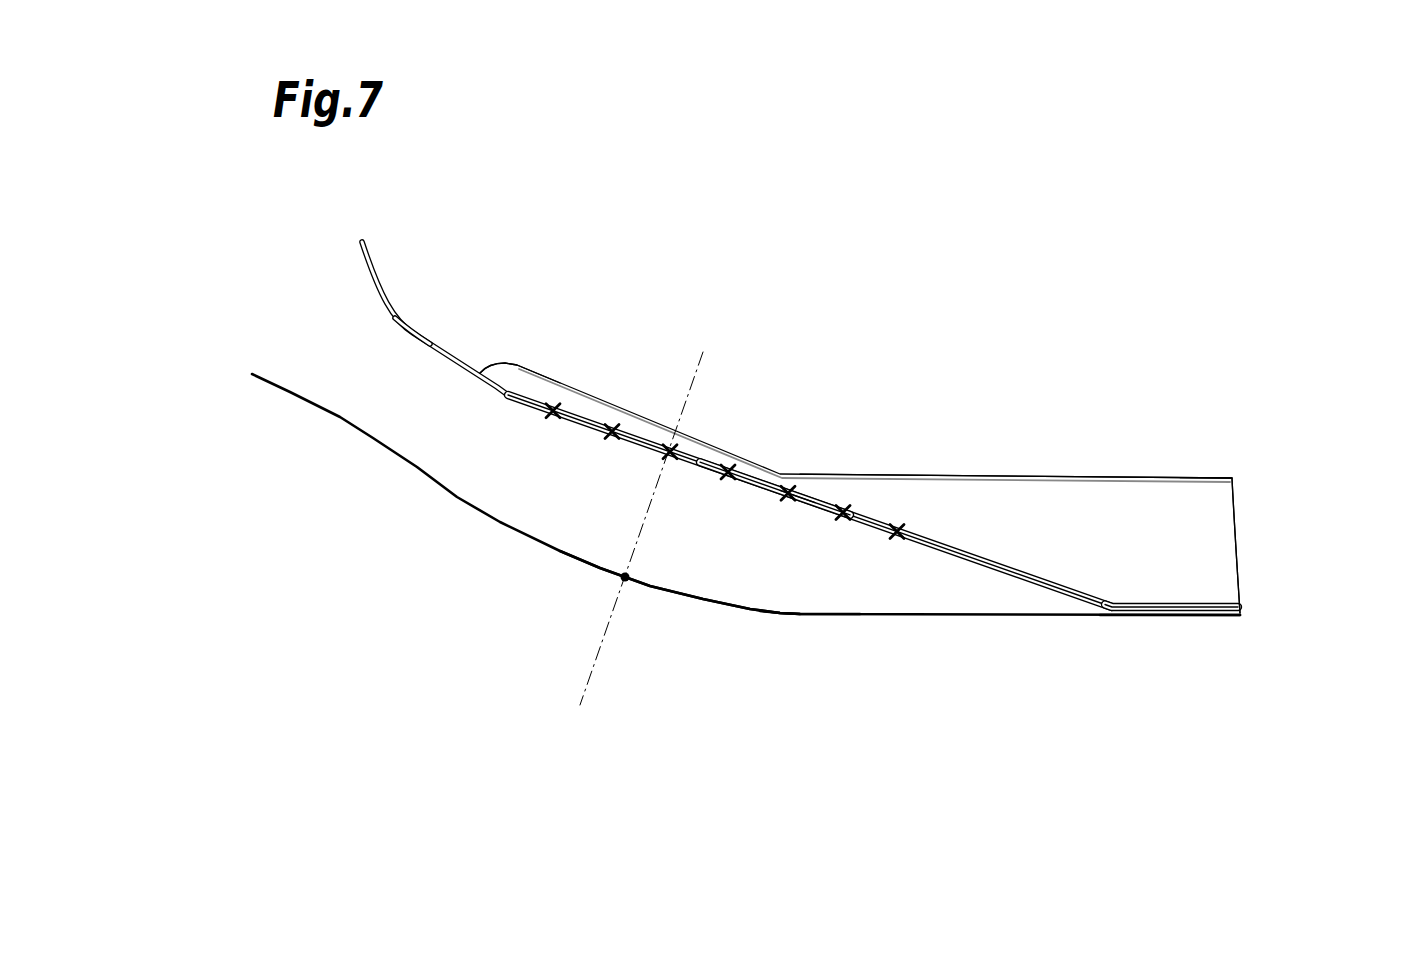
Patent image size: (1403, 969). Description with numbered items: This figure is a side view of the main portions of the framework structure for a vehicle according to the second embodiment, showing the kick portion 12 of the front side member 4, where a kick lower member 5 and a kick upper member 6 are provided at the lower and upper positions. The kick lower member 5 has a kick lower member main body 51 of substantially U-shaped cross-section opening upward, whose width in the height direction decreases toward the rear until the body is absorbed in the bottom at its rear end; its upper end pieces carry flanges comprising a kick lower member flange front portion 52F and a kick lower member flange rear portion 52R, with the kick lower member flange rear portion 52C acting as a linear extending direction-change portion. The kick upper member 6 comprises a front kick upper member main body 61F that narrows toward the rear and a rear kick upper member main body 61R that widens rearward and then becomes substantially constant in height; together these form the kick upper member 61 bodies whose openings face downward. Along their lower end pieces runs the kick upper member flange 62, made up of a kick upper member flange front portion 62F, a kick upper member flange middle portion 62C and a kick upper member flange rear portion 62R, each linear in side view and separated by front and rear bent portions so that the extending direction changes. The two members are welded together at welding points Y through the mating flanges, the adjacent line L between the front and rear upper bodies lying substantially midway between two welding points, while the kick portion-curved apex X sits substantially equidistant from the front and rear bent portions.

The front side member 4 is at (856, 350).
The kick lower member 5 is at (959, 622).
The kick lower member main body 51 is at (703, 601).
The kick lower member flange front portion 52F is at (422, 349).
The kick lower member flange rear portion 52C is at (773, 615).
The kick lower member flange rear portion 52R is at (1170, 617).
The kick upper member 6 is at (1118, 498).
The plate body 61 is at (996, 489).
The front kick upper member main body 61F is at (528, 383).
The rear kick upper member main body 61R is at (1200, 488).
The kick upper member flange 62 is at (821, 499).
The kick upper member flange front portion 62F is at (471, 363).
The kick upper member flange middle portion 62C is at (765, 480).
The kick upper member flange rear portion 62R is at (1200, 603).
The kick portion 12 is at (616, 396).
The adjacent line L is at (794, 478).
The kick portion-curved apex X is at (626, 583).
The welding points Y is at (728, 481).